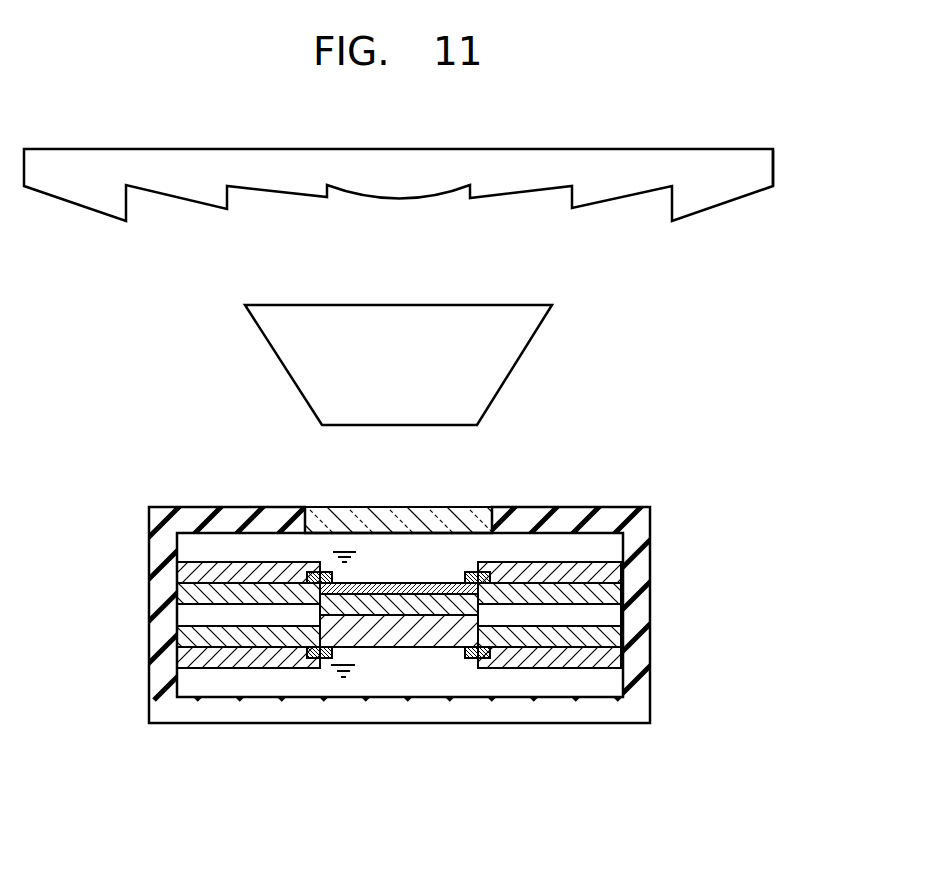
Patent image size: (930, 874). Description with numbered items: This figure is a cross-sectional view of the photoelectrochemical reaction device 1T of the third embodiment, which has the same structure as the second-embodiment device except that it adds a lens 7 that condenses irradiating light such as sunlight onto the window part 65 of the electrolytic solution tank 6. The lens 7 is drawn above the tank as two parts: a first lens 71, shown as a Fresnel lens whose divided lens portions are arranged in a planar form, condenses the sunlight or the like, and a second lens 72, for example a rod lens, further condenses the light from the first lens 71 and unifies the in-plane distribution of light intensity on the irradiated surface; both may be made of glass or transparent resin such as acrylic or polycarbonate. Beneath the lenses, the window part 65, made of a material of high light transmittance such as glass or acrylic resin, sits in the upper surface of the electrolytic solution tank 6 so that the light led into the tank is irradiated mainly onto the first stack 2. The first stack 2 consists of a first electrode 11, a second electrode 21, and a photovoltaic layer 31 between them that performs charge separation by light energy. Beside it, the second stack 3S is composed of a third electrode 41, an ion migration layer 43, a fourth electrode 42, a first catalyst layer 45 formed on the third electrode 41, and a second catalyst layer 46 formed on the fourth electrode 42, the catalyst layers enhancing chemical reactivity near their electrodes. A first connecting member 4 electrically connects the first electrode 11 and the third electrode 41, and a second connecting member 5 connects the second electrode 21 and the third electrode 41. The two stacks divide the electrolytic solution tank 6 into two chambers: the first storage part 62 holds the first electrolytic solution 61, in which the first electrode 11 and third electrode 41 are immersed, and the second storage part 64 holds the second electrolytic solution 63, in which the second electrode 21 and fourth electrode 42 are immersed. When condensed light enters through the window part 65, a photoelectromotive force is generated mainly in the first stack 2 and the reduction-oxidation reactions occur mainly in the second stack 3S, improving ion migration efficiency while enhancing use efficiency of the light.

The photoelectrochemical reaction device 1T is at (684, 121).
The lens 7 is at (157, 146).
The first lens 71 is at (775, 165).
The second lens 72 is at (517, 368).
The electrolytic solution tank 6 is at (233, 517).
The window part 65 is at (340, 518).
The first electrolytic solution 61 is at (598, 540).
The first storage part 62 is at (623, 557).
The second electrolytic solution 63 is at (598, 690).
The second storage part 64 is at (622, 667).
The first catalyst layer 45 is at (193, 575).
The third electrode 41 is at (193, 594).
The ion migration layer 43 is at (193, 613).
The fourth electrode 42 is at (193, 634).
The second catalyst layer 46 is at (193, 656).
The second stack 3S is at (592, 579).
The first stack 2 is at (399, 616).
The first electrode 11 is at (393, 583).
The photovoltaic layer 31 is at (380, 608).
The second electrode 21 is at (400, 633).
The first connecting member 4 is at (470, 572).
The second connecting member 5 is at (474, 660).